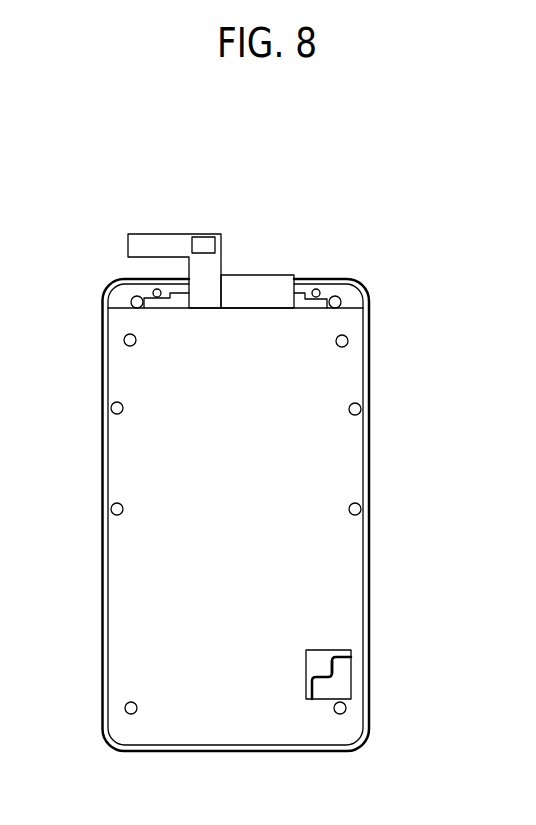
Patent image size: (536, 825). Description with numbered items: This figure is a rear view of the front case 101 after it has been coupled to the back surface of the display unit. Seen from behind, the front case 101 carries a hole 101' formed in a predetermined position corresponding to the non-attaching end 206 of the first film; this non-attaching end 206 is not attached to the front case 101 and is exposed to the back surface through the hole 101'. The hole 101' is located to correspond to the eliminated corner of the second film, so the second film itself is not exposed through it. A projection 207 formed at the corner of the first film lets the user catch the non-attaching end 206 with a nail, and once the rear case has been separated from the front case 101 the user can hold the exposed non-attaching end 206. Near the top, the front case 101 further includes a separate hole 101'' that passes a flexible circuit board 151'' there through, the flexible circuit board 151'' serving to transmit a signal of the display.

The front case 101 is at (278, 515).
The hole 101' is at (314, 726).
The hole 101'' is at (119, 350).
The flexible circuit board 151'' is at (211, 240).
The non-attaching end 206 is at (334, 672).
The projection 207 is at (315, 663).